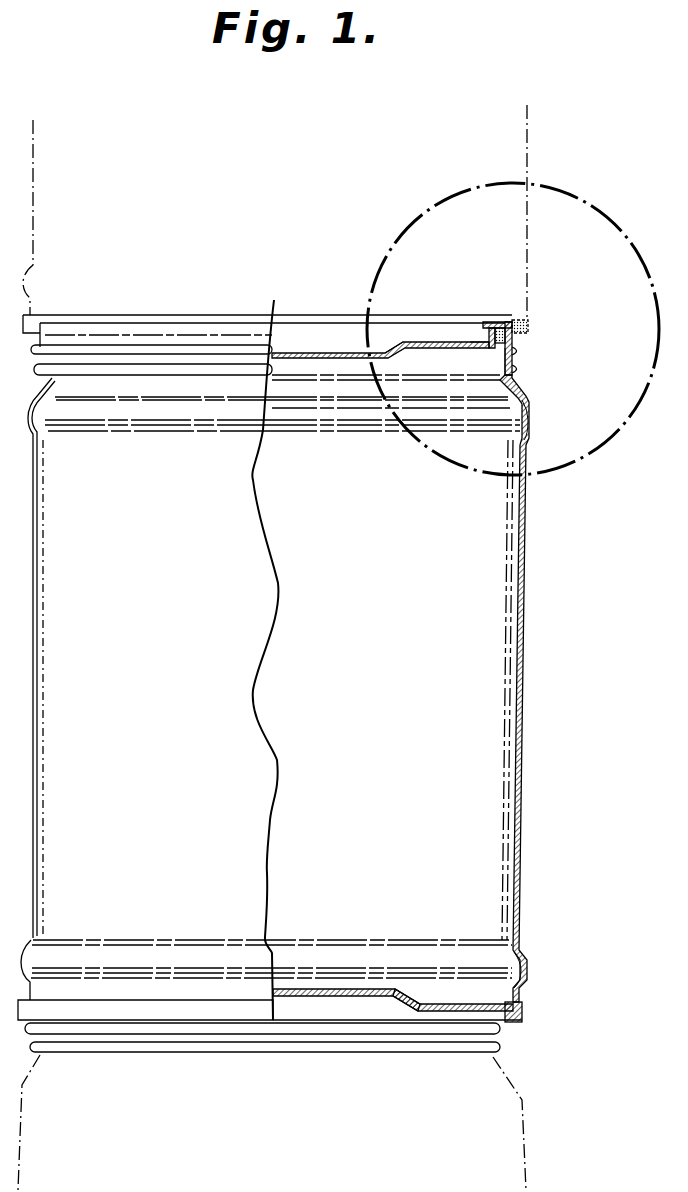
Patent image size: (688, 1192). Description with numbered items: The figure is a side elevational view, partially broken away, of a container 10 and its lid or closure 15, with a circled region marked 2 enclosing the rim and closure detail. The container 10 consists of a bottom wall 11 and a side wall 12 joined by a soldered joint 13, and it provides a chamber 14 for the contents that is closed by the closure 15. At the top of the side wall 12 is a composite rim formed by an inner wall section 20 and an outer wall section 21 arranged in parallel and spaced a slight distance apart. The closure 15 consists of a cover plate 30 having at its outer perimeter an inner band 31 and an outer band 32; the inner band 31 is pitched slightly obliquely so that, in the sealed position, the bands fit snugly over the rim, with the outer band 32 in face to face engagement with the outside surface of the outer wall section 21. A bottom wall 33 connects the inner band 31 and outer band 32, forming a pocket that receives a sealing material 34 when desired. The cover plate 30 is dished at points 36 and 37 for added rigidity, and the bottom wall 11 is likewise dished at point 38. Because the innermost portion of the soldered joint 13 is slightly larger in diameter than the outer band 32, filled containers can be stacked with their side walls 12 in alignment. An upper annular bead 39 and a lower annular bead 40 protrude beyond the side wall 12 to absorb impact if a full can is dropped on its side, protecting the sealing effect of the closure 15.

The detail circle (FIG. 2 region) 2 is at (513, 329).
The container 10 is at (136, 465).
The bottom wall 11 is at (457, 1012).
The side wall 12 is at (528, 634).
The soldered joint 13 is at (524, 1012).
The chamber 14 is at (292, 660).
The closure 15 is at (321, 313).
The inner wall section 20 is at (494, 380).
The outer wall section 21 is at (520, 358).
The cover plate 30 is at (290, 345).
The inner band 31 is at (487, 338).
The outer band 32 is at (528, 336).
The bottom wall 33 is at (484, 321).
The sealing material 34 is at (528, 322).
The dished point 36 is at (406, 362).
The dished point 37 is at (468, 368).
The dished point 38 is at (408, 992).
The upper annular bead 39 is at (533, 418).
The lower annular bead 40 is at (528, 969).